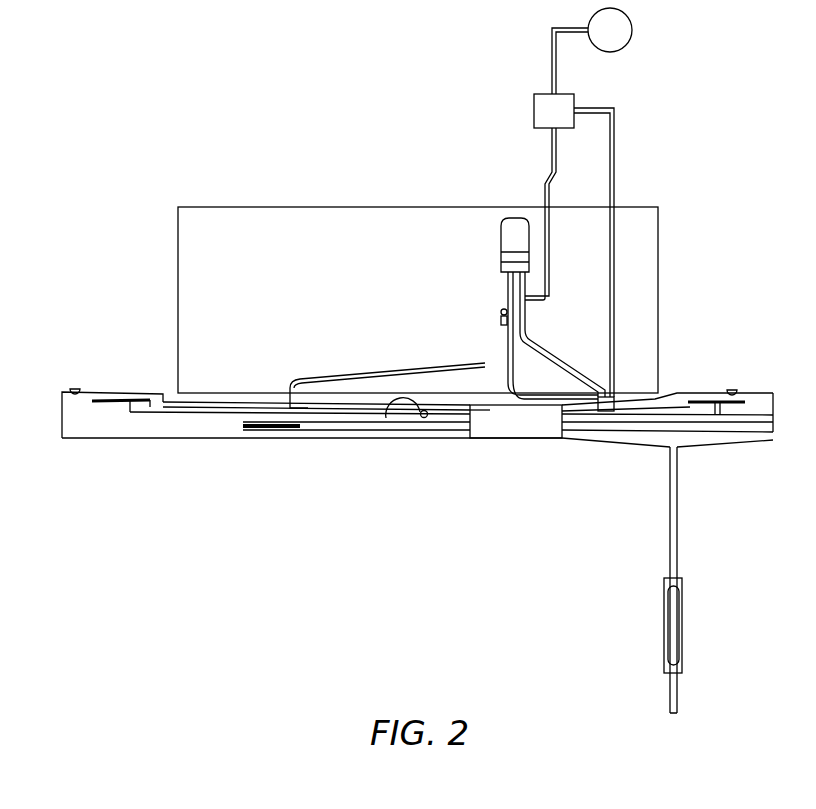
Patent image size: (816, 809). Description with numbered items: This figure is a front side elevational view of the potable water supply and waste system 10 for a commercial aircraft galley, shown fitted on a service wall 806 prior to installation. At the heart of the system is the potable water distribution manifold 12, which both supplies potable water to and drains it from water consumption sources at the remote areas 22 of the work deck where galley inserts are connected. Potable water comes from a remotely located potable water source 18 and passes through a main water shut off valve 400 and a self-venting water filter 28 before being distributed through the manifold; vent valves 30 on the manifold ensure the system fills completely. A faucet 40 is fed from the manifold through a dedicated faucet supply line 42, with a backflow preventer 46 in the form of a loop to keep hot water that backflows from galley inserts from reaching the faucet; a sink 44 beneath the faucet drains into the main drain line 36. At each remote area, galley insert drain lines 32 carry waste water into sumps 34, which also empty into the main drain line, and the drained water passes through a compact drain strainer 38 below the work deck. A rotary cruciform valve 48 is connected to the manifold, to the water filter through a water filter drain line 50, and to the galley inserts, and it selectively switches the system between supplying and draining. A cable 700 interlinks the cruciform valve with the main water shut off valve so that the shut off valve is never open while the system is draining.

The potable water supply and waste system 10 is at (125, 185).
The potable water distribution manifold 12 is at (232, 414).
The potable water source 18 is at (615, 32).
The remote area 22 is at (52, 425).
The water filter 28 is at (511, 240).
The vent valve 30 is at (76, 386).
The galley insert drain line 32 is at (147, 413).
The sump 34 is at (298, 428).
The main drain line 36 is at (675, 523).
The compact drain strainer 38 is at (673, 632).
The faucet 40 is at (500, 319).
The faucet supply line 42 is at (503, 311).
The sink 44 is at (510, 430).
The backflow preventer 46 is at (490, 372).
The cruciform valve 48 is at (607, 403).
The water filter drain line 50 is at (548, 347).
The main water shut off valve 400 is at (568, 102).
The cable 700 is at (614, 178).
The service wall 806 is at (216, 225).